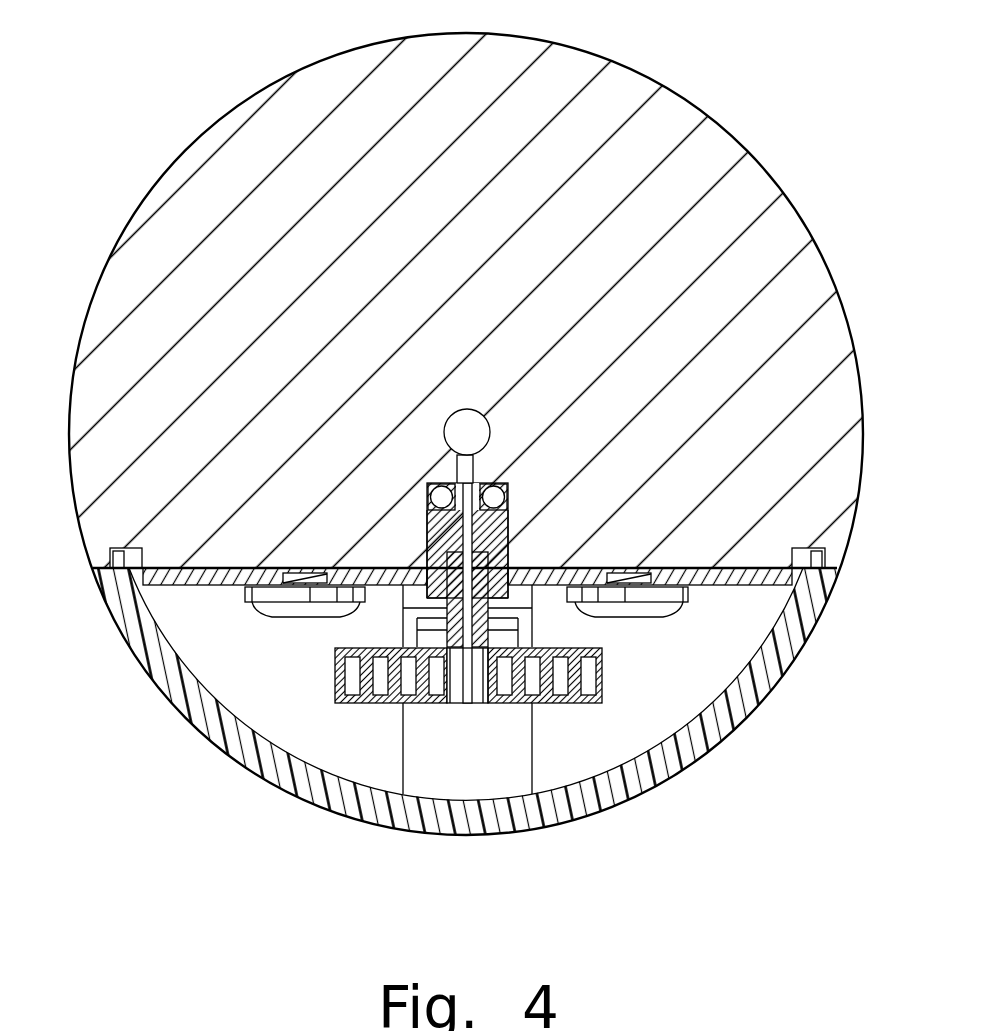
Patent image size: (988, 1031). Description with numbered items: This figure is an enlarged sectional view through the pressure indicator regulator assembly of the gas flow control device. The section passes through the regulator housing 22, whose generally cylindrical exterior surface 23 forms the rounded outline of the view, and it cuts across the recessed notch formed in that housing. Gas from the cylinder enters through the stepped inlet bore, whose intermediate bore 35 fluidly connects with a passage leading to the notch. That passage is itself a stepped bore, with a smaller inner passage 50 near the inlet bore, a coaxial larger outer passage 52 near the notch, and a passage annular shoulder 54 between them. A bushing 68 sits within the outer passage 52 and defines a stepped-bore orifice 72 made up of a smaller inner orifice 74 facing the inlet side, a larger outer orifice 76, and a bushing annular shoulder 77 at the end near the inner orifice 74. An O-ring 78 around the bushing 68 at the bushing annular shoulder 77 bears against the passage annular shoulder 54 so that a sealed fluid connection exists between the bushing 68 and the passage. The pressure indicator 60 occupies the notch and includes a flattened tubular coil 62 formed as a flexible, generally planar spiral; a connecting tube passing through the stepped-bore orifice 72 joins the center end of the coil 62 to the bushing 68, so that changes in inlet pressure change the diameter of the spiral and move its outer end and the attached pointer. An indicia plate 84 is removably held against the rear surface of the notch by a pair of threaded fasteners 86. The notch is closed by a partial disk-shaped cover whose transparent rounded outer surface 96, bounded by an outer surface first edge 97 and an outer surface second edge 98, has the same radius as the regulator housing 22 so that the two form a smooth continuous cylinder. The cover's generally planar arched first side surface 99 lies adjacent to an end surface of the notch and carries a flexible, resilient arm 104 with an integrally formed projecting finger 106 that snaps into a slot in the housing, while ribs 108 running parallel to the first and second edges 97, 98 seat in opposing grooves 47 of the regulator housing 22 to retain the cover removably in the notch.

The regulator housing 22 is at (567, 72).
The cylindrical exterior surface 23 is at (130, 222).
The intermediate bore 35 is at (467, 432).
The groove 47 is at (133, 557).
The inner passage 50 is at (428, 481).
The outer passage 52 is at (427, 540).
The passage annular shoulder 54 is at (456, 468).
The pressure indicator 60 is at (332, 705).
The flattened tubular coil 62 is at (583, 702).
The bushing 68 is at (512, 558).
The stepped-bore orifice 72 is at (423, 568).
The inner orifice 74 is at (510, 548).
The outer orifice 76 is at (500, 555).
The bushing annular shoulder 77 is at (490, 548).
The O-ring 78 is at (427, 513).
The indicia plate 84 is at (203, 587).
The threaded fastener 86 is at (273, 608).
The outer surface 96 is at (478, 822).
The outer surface first edge 97 is at (92, 578).
The outer surface second edge 98 is at (832, 585).
The first side surface 99 is at (270, 707).
The arm 104 is at (428, 640).
The projecting finger 106 is at (503, 622).
The rib 108 is at (112, 598).